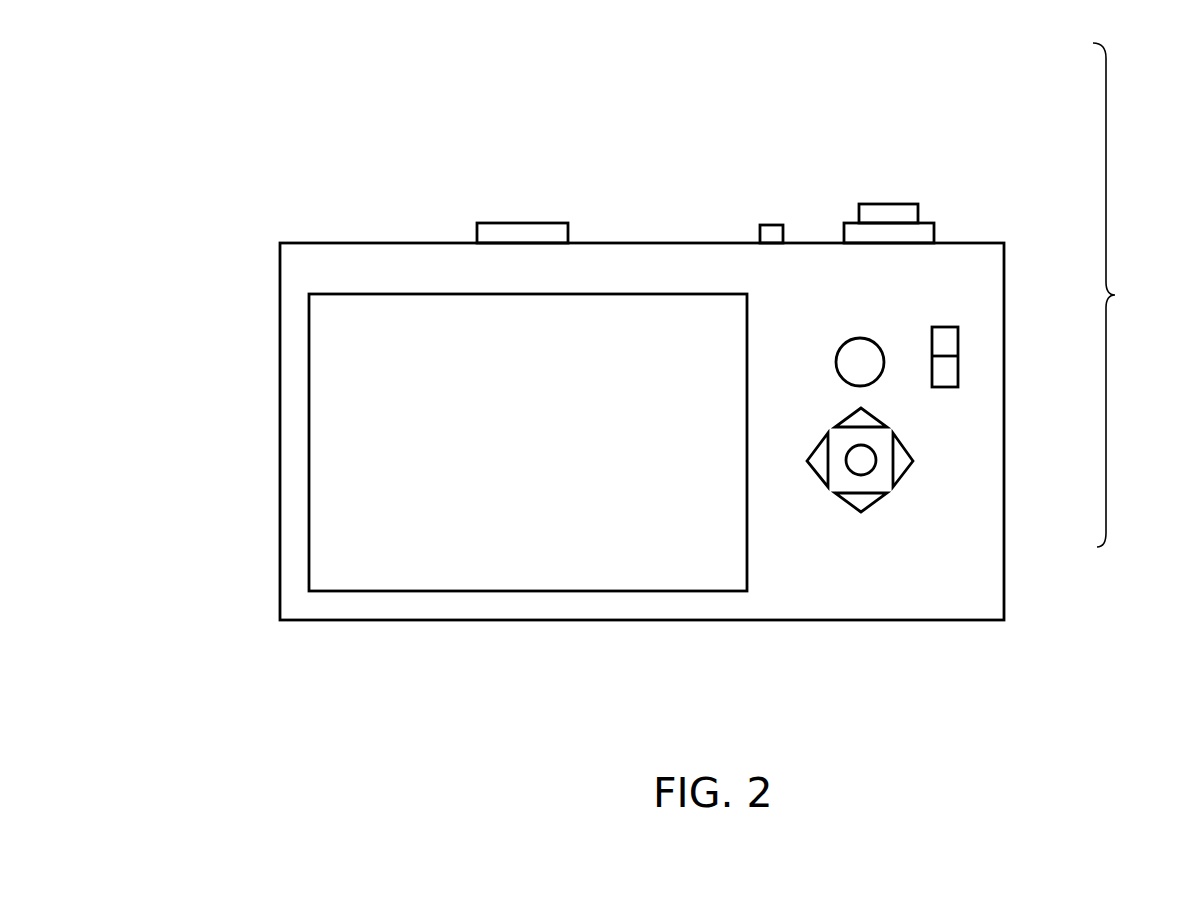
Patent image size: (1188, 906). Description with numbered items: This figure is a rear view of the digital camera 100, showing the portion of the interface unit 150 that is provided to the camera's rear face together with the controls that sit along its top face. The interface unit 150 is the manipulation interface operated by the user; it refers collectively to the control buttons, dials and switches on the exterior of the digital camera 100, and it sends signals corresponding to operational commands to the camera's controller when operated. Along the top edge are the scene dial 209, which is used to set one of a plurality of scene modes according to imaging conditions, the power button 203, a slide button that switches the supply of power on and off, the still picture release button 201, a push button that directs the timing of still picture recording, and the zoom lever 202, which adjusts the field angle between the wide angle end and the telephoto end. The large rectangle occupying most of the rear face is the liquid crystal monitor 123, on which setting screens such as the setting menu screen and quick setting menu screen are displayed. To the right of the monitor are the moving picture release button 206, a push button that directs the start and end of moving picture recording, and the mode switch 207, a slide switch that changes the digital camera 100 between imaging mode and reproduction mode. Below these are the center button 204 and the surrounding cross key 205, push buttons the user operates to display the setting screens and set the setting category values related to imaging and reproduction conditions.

The digital camera 100 is at (268, 168).
The liquid crystal monitor 123 is at (470, 429).
The interface unit 150 is at (1135, 295).
The still picture release button 201 is at (912, 208).
The zoom lever 202 is at (925, 234).
The power button 203 is at (767, 226).
The center button 204 is at (862, 462).
The cross key 205 is at (863, 500).
The moving picture release button 206 is at (858, 362).
The mode switch 207 is at (940, 363).
The scene dial 209 is at (522, 233).